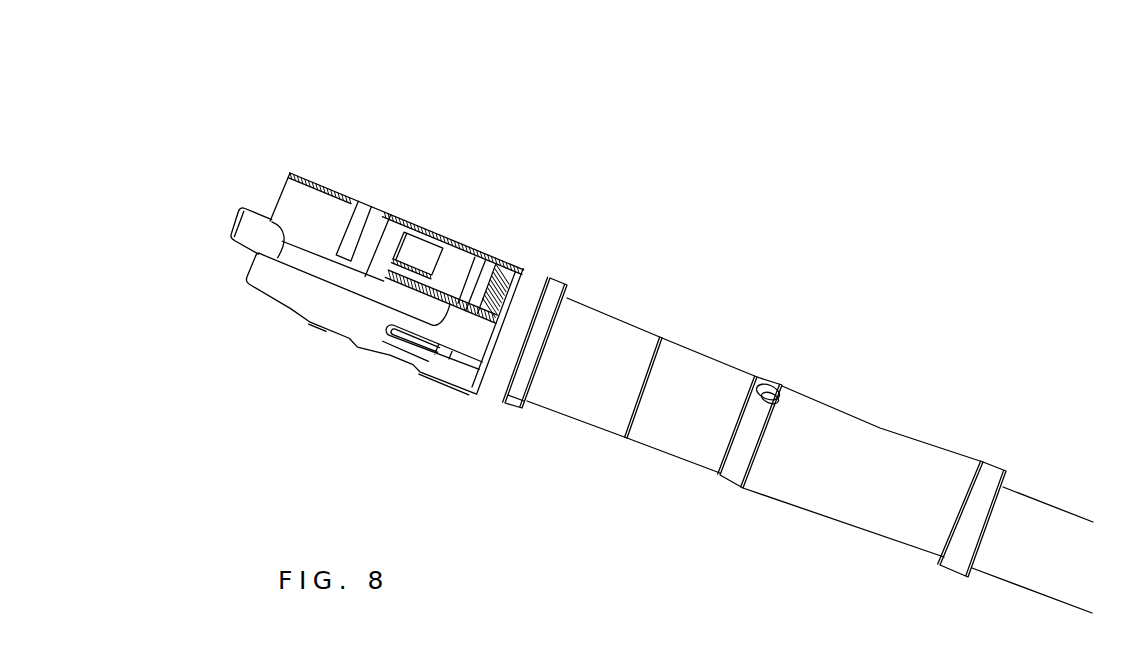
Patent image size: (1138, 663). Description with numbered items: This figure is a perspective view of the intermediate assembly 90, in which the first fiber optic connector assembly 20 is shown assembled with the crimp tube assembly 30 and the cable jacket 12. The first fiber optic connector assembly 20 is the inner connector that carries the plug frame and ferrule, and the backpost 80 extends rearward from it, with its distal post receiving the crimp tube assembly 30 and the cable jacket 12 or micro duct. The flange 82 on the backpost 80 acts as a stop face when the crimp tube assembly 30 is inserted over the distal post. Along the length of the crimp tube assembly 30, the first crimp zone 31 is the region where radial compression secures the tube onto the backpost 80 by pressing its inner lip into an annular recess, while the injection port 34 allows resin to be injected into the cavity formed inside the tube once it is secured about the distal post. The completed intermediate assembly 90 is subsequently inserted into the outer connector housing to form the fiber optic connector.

The intermediate assembly 90 is at (181, 77).
The first fiber optic connector assembly 20 is at (334, 169).
The backpost 80 is at (541, 258).
The flange 82 is at (509, 402).
The first crimp zone 31 is at (612, 287).
The injection port 34 is at (773, 387).
The crimp tube assembly 30 is at (847, 480).
The cable jacket 12 is at (1043, 570).